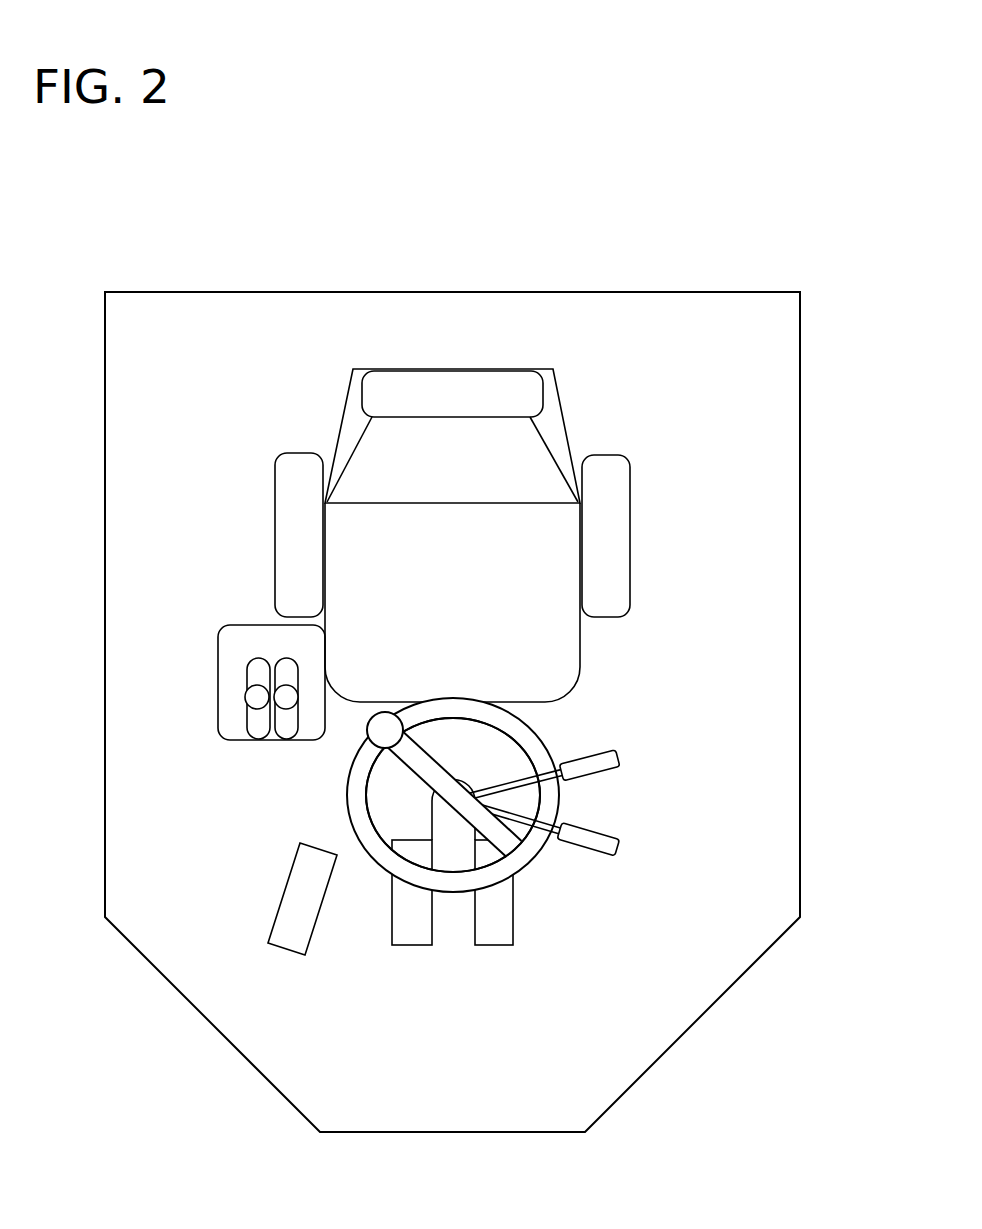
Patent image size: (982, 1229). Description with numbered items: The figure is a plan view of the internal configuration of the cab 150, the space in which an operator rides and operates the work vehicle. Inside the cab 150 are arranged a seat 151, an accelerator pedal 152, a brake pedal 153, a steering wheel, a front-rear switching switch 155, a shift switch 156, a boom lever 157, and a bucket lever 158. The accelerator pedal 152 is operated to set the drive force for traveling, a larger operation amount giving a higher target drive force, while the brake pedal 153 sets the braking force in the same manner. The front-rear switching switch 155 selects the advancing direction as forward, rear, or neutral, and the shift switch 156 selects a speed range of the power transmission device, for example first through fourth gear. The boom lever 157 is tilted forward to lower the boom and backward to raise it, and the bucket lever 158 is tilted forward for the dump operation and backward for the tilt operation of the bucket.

The cab 150 is at (725, 224).
The seat 151 is at (490, 368).
The accelerator pedal 152 is at (272, 928).
The brake pedal 153 is at (410, 945).
The front-rear switching switch 155 is at (618, 847).
The shift switch 156 is at (620, 762).
The boom lever 157 is at (253, 693).
The bucket lever 158 is at (284, 700).